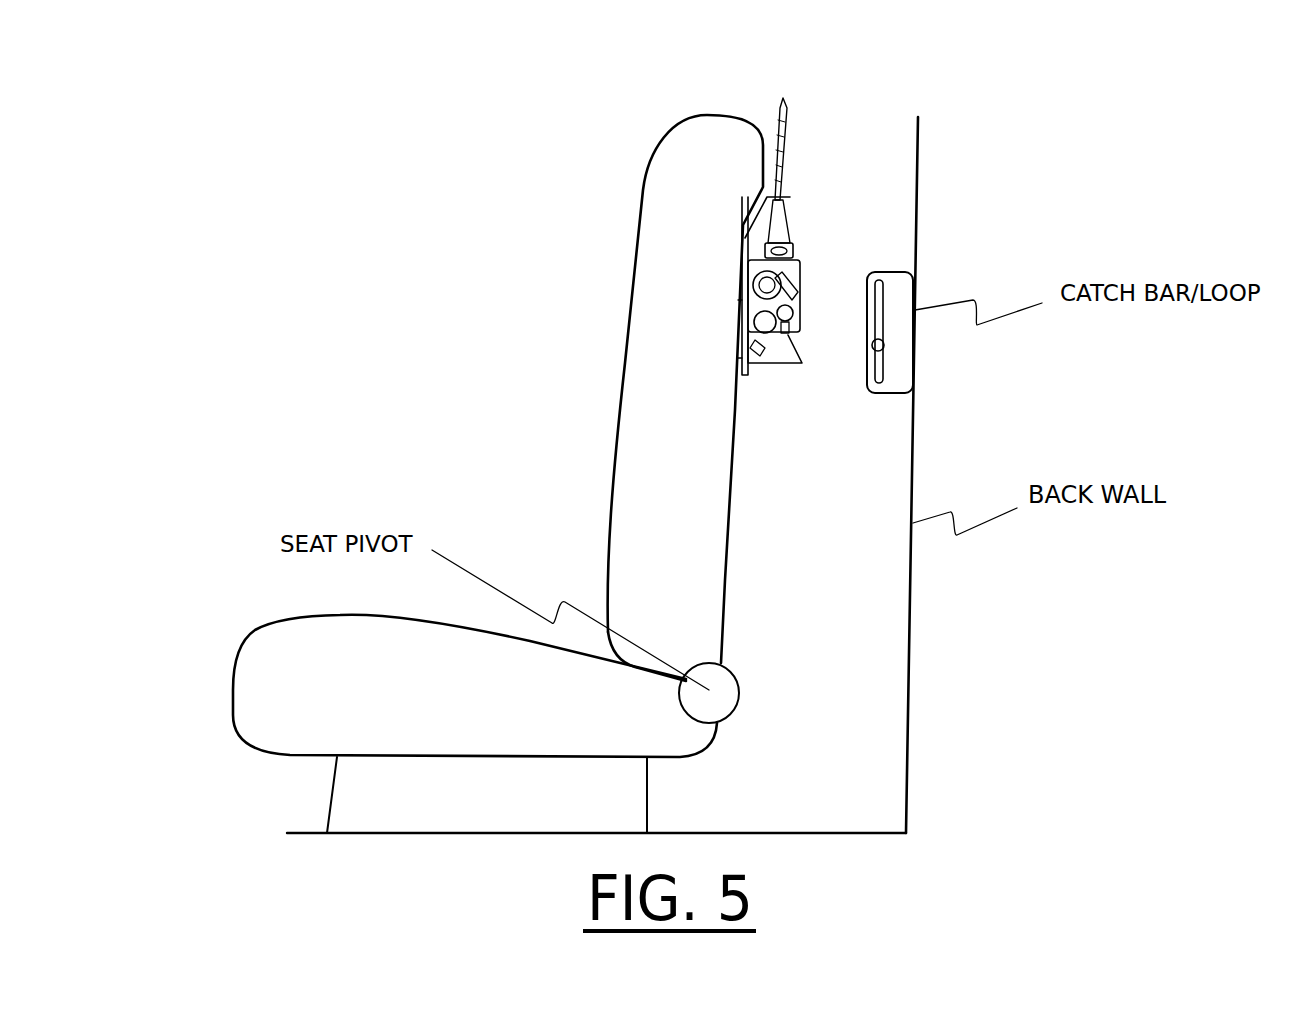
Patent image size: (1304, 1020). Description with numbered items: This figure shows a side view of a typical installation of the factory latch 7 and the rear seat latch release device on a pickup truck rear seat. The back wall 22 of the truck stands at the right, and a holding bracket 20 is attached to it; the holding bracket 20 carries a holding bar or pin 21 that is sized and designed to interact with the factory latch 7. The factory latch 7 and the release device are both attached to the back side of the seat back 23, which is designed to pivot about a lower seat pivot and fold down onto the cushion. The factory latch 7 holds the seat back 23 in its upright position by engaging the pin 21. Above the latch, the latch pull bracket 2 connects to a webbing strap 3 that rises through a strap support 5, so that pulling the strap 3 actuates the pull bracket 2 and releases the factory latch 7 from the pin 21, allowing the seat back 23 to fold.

The latch pull bracket 2 is at (790, 247).
The webbing strap 3 is at (790, 117).
The strap support 5 is at (780, 198).
The factory latch 7 is at (773, 365).
The holding bracket 20 is at (897, 353).
The holding bar or pin 21 is at (868, 353).
The back wall 22 is at (913, 445).
The seat back 23 is at (658, 400).